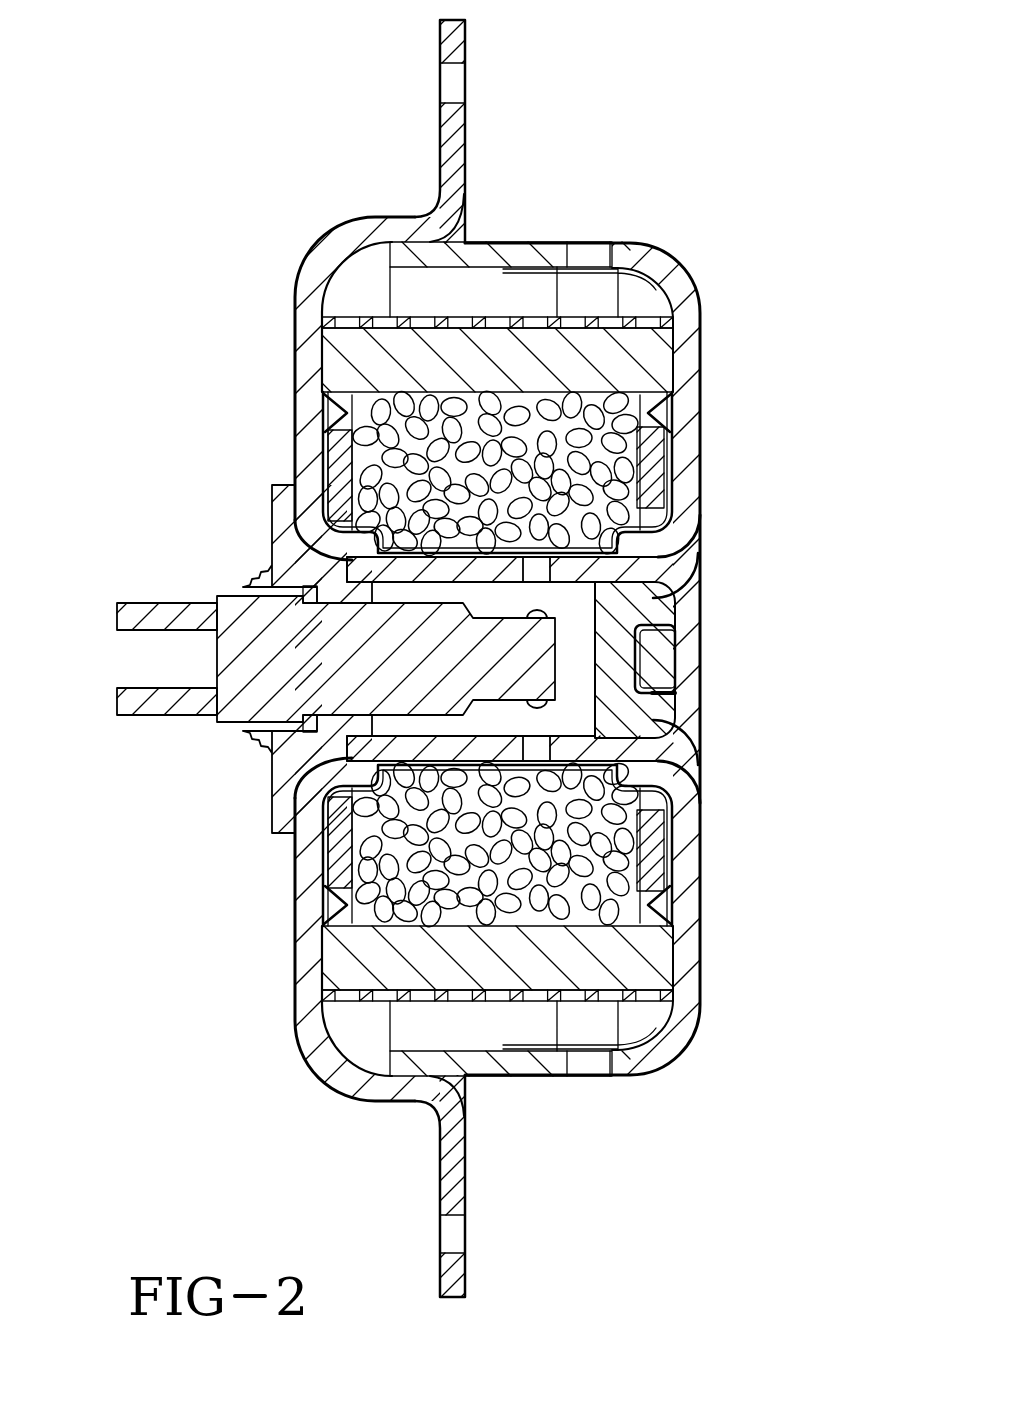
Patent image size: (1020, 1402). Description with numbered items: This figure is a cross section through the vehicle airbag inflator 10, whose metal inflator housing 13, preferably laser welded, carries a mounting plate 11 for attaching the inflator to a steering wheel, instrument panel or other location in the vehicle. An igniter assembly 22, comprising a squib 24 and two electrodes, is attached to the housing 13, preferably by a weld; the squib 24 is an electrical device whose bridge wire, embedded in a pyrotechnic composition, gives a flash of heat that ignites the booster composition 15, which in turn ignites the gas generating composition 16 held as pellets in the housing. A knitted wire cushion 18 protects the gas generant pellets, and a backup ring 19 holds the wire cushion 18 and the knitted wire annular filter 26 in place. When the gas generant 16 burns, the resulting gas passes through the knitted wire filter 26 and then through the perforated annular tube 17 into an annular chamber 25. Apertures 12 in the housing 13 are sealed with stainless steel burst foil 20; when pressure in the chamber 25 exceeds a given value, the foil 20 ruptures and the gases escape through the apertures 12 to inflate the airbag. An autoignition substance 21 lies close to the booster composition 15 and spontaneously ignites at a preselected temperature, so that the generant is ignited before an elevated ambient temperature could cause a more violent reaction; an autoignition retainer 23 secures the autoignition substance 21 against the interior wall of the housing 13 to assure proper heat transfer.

The vehicle airbag inflator 10 is at (765, 124).
The mounting plate 11 is at (452, 1180).
The apertures 12 is at (596, 250).
The inflator housing 13 is at (663, 265).
The booster composition 15 is at (650, 605).
The gas generating composition 16 is at (580, 880).
The perforated annular tube 17 is at (348, 322).
The knitted wire cushion 18 is at (337, 460).
The backup ring 19 is at (670, 395).
The burst foil 20 is at (617, 1050).
The autoignition substance 21 is at (665, 648).
The igniter assembly 22 is at (285, 538).
The autoignition retainer 23 is at (672, 695).
The squib 24 is at (247, 695).
The annular chamber 25 is at (600, 1017).
The knitted wire annular filter 26 is at (335, 370).